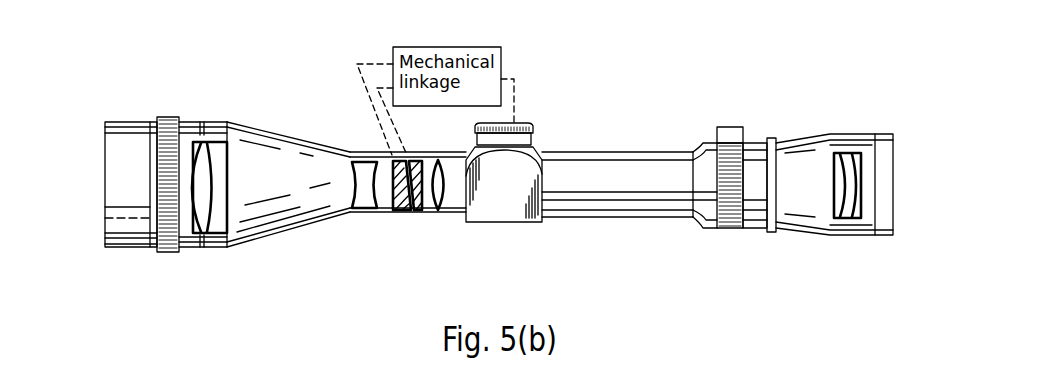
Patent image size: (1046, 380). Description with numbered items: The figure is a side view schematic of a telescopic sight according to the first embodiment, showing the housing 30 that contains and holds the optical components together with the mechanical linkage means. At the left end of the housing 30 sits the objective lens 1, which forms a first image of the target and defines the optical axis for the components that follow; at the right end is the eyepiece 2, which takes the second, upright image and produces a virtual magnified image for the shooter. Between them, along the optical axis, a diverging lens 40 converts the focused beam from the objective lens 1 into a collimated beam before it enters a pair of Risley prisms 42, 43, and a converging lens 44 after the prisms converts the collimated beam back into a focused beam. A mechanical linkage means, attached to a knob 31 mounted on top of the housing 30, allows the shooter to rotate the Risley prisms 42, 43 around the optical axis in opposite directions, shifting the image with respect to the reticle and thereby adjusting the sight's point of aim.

The objective lens 1 is at (210, 233).
The eyepiece 2 is at (846, 218).
The housing 30 is at (302, 138).
The knob 31 is at (528, 123).
The diverging lens 40 is at (360, 208).
The Risley prism 42 is at (399, 210).
The Risley prism 43 is at (413, 210).
The converging lens 44 is at (438, 210).